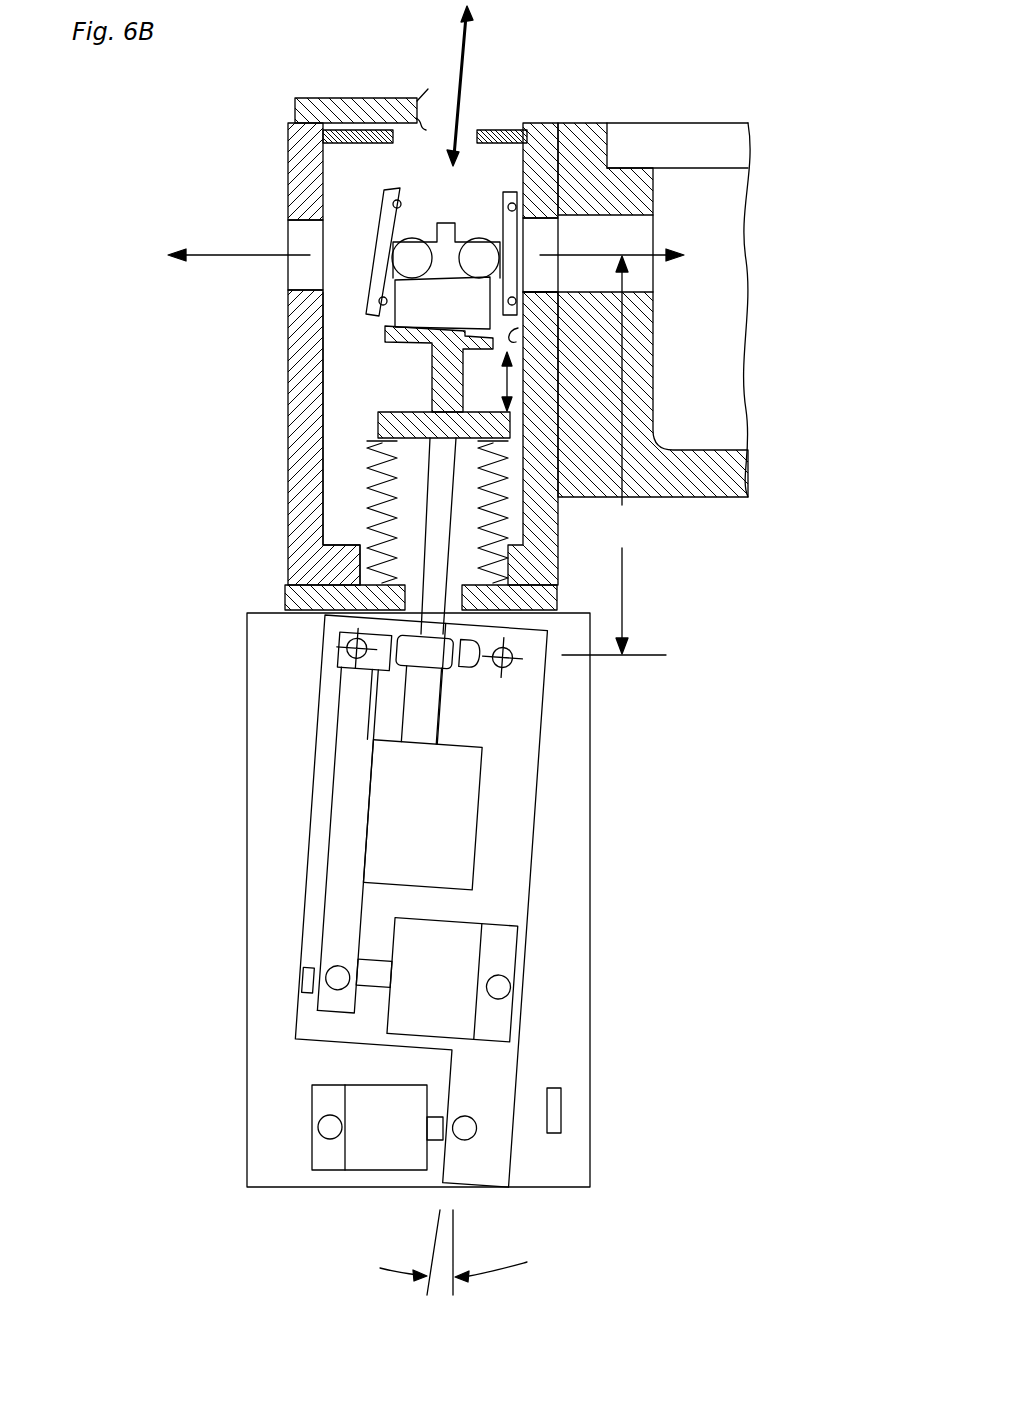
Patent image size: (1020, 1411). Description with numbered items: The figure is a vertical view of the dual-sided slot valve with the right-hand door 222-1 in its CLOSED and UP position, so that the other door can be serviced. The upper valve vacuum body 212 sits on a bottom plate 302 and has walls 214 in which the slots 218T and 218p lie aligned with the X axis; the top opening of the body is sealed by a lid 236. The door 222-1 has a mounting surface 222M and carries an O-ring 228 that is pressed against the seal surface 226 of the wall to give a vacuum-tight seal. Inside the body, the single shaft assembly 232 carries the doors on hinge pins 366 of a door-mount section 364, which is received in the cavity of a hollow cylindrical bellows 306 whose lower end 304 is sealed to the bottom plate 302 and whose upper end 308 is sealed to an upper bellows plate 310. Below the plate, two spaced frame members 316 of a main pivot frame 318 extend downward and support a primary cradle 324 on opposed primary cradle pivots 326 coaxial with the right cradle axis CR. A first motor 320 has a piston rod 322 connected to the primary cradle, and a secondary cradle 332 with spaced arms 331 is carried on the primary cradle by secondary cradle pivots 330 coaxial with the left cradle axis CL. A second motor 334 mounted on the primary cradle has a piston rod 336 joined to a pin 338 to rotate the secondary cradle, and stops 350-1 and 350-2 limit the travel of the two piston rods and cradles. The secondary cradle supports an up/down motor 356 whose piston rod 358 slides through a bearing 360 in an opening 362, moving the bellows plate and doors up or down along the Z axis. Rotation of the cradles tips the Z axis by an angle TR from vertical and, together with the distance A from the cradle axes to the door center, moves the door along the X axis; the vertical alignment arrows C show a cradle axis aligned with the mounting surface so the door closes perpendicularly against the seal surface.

The upper valve vacuum body 212 is at (296, 188).
The wall 214 is at (298, 401).
The slot 218T is at (298, 278).
The slot 218p is at (548, 222).
The mounting surface 222M is at (500, 192).
The door 222-1 is at (511, 188).
The seal surface 226 is at (520, 343).
The O-ring 228 is at (402, 204).
The single shaft assembly 232 is at (334, 497).
The lid 236 is at (367, 98).
The bottom plate 302 is at (298, 598).
The lower end 304 is at (380, 522).
The bellows 306 is at (357, 474).
The upper end 308 is at (380, 443).
The upper bellows plate 310 is at (393, 417).
The frame member 316 is at (570, 1150).
The main pivot frame 318 is at (604, 997).
The first motor 320 is at (325, 1155).
The piston rod 322 is at (438, 1118).
The primary cradle 324 is at (488, 1128).
The primary cradle pivot 326 is at (505, 642).
The secondary cradle pivot 330 is at (340, 631).
The arm 331 is at (338, 772).
The secondary cradle 332 is at (314, 822).
The second motor 334 is at (500, 944).
The piston rod 336 is at (375, 975).
The pin 338 is at (342, 962).
The stop 350-1 is at (557, 1107).
The stop 350-2 is at (303, 978).
The up/down motor 356 is at (438, 868).
The piston rod 358 is at (445, 728).
The bearing 360 is at (403, 663).
The opening 362 is at (425, 661).
The door-mount section 364 is at (440, 533).
The hinge pin 366 is at (488, 234).
The left cradle axis CL is at (377, 668).
The right cradle axis CR is at (497, 668).
The distance A is at (614, 455).
The vertical alignment arrows C is at (497, 386).
The X-axis X is at (423, 253).
The Z-axis Z is at (455, 86).
The angle TR is at (475, 1252).